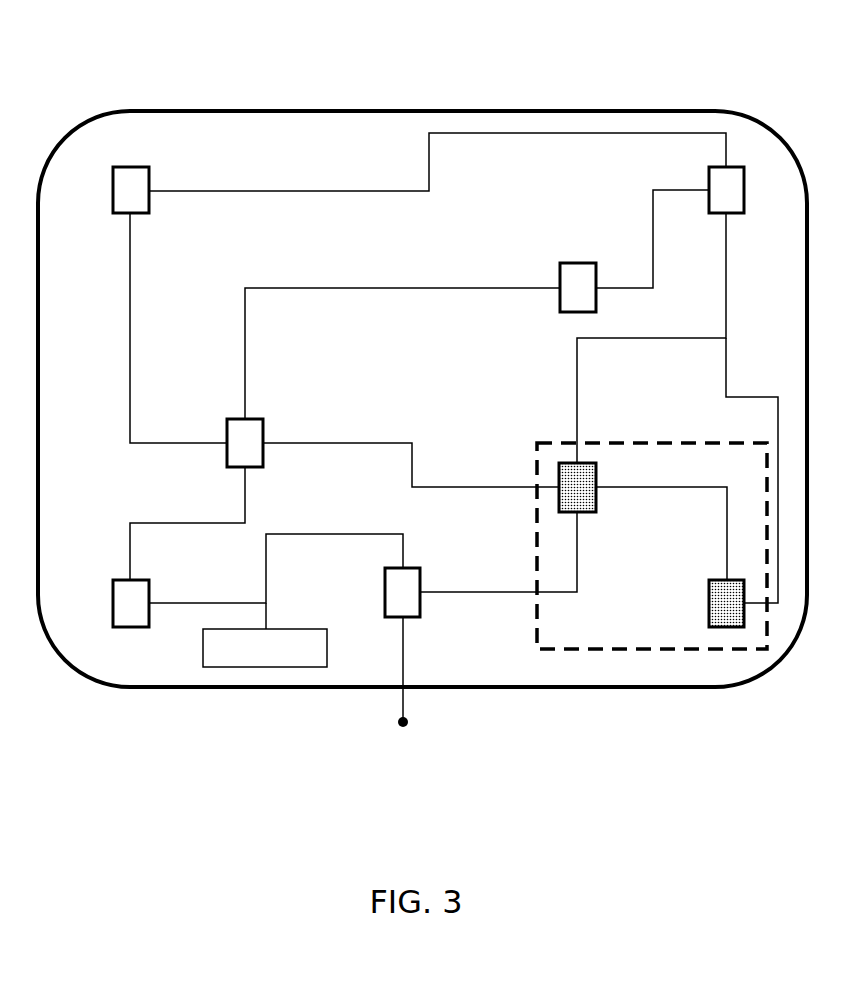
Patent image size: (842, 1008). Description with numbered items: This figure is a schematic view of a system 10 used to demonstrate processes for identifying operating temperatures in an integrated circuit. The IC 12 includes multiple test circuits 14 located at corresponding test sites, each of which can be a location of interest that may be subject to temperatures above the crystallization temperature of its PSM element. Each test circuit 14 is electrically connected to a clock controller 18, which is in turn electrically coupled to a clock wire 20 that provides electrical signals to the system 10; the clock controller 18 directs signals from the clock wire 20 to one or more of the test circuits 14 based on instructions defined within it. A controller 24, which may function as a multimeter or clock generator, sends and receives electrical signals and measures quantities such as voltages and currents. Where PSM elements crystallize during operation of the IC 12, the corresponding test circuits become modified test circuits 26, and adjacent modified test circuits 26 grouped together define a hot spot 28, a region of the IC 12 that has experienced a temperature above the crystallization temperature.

The system 10 is at (76, 91).
The IC 12 is at (287, 112).
The test circuit 14 is at (149, 213).
The clock controller 18 is at (420, 603).
The clock wire 20 is at (410, 727).
The controller 24 is at (301, 629).
The modified test circuit 26 is at (596, 495).
The hot spot 28 is at (685, 442).